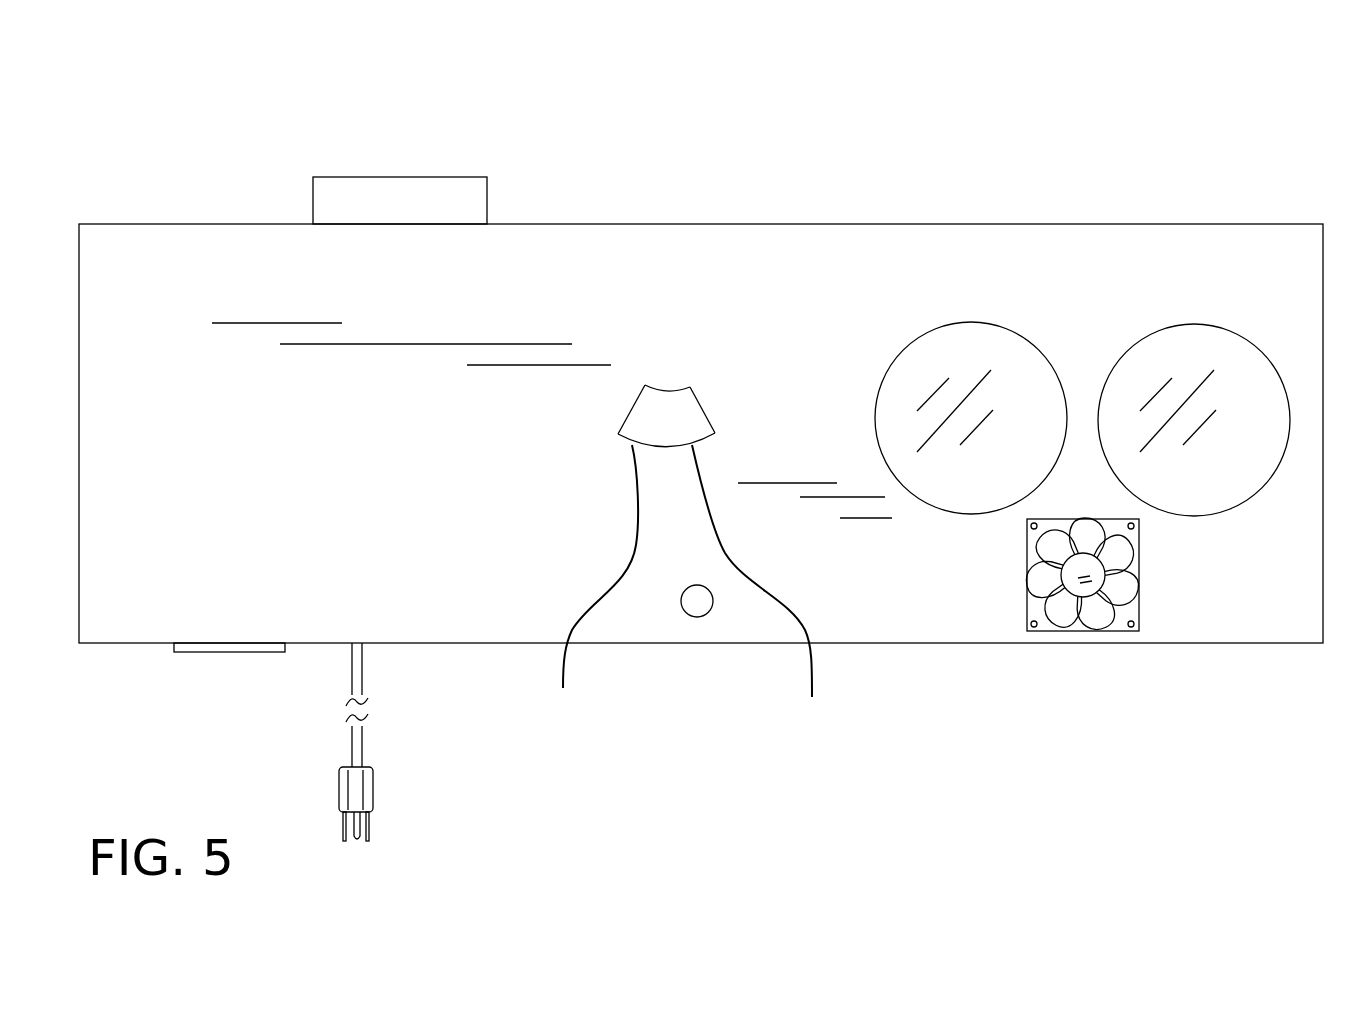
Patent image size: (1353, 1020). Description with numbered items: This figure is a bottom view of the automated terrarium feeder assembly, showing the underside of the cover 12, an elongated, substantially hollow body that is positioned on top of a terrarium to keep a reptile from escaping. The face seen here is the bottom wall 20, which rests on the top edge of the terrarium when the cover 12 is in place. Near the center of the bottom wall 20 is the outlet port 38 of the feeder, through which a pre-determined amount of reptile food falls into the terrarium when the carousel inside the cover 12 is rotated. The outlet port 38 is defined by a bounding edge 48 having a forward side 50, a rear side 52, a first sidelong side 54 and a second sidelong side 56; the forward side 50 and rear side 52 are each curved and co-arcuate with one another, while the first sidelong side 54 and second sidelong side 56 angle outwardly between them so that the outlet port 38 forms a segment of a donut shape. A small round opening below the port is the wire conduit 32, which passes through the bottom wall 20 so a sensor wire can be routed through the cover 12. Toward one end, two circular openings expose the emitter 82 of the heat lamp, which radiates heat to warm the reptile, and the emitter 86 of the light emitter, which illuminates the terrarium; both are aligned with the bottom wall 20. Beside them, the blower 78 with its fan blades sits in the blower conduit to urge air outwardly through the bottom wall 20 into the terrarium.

The cover 12 is at (1323, 224).
The bottom wall 20 is at (828, 290).
The wire conduit 32 is at (698, 620).
The outlet port 38 is at (681, 404).
The bounding edge 48 is at (590, 591).
The forward side 50 is at (657, 385).
The rear side 52 is at (762, 596).
The first sidelong side 54 is at (630, 410).
The second sidelong side 56 is at (703, 408).
The blower 78 is at (1075, 596).
The emitter 82 is at (958, 372).
The emitter 86 is at (1177, 365).